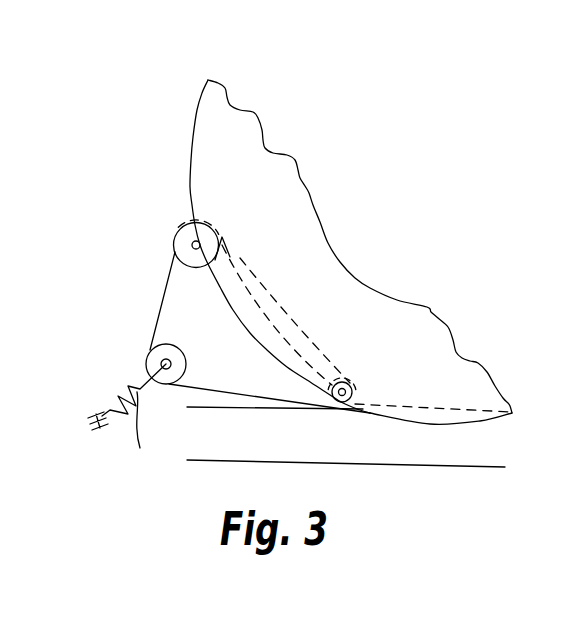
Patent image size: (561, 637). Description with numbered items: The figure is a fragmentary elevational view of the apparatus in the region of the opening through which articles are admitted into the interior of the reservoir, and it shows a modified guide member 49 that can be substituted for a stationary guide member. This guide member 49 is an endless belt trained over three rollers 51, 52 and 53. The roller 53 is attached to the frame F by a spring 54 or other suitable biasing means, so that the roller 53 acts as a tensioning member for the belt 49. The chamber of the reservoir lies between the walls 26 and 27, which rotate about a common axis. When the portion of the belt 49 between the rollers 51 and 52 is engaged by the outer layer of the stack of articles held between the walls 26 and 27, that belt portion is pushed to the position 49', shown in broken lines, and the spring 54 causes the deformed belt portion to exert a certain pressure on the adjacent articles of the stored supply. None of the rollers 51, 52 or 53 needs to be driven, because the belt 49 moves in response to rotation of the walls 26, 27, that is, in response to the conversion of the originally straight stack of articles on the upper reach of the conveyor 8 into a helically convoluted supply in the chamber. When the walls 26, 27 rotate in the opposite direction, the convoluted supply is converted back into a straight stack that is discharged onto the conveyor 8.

The wall 26 is at (351, 252).
The wall 27 is at (240, 145).
The modified guide member 49 is at (255, 302).
The deformed belt portion position 49' is at (375, 335).
The roller 51 is at (189, 236).
The roller 52 is at (350, 402).
The roller 53 is at (156, 354).
The spring 54 is at (134, 418).
The conveyor 8 is at (282, 407).
The frame F is at (100, 418).